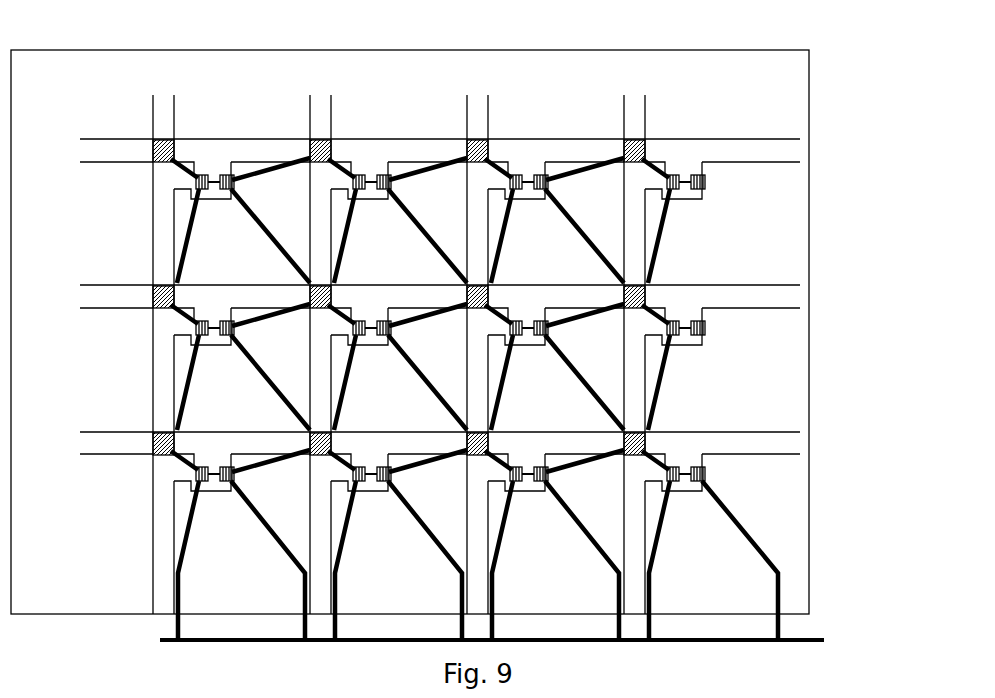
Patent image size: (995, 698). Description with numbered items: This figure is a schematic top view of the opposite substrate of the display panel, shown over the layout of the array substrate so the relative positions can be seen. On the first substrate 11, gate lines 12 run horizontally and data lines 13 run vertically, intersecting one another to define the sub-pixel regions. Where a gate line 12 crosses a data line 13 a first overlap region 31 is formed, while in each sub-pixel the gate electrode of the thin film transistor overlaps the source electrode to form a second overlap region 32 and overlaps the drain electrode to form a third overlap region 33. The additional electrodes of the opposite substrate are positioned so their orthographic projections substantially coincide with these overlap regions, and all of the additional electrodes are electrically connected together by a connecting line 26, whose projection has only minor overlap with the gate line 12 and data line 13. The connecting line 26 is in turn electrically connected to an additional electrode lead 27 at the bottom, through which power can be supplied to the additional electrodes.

The first substrate 11 is at (375, 63).
The gate line 12 is at (98, 151).
The data line 13 is at (160, 112).
The first overlap region 31 is at (157, 140).
The second overlap region 32 is at (205, 176).
The third overlap region 33 is at (231, 173).
The connecting line 26 is at (657, 256).
The additional electrode lead 27 is at (790, 637).